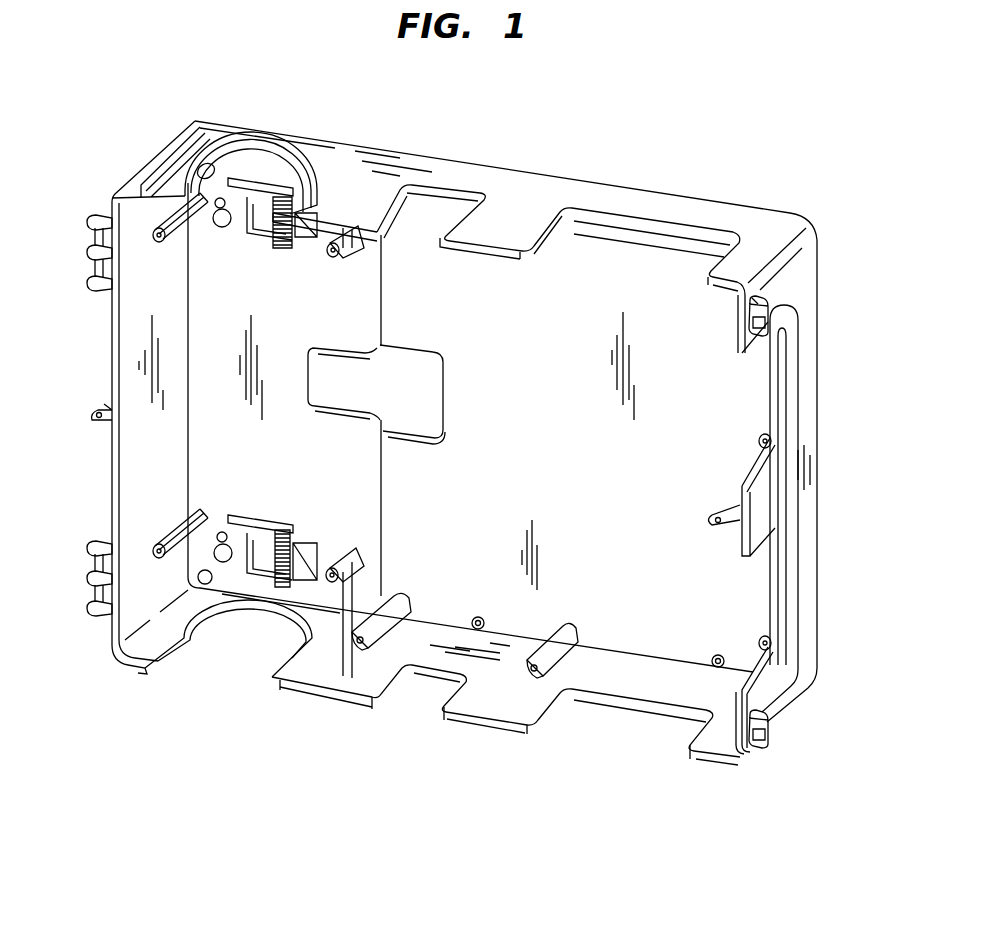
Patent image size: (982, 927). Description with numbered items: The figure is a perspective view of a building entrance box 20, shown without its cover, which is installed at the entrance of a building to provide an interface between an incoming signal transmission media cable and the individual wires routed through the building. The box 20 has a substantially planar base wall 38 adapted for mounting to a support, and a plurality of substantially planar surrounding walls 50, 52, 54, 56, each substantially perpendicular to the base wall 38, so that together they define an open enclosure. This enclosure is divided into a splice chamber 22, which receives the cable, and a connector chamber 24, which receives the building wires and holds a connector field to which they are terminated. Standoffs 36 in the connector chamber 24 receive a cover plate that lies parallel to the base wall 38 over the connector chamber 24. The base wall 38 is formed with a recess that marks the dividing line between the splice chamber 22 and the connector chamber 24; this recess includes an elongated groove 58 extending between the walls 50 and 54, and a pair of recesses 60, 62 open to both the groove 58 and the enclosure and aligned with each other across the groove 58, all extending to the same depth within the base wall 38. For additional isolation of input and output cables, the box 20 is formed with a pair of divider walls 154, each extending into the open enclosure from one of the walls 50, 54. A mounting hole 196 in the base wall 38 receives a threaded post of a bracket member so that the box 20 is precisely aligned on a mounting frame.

The building entrance box 20 is at (457, 727).
The splice chamber 22 is at (180, 476).
The connector chamber 24 is at (722, 416).
The standoffs 36 is at (410, 606).
The base wall 38 is at (577, 447).
The surrounding wall 50 is at (524, 200).
The surrounding wall 52 is at (795, 498).
The surrounding wall 54 is at (490, 704).
The surrounding wall 56 is at (125, 365).
The elongated groove 58 is at (390, 304).
The recess 60 is at (344, 392).
The recess 62 is at (432, 380).
The divider walls 154 is at (372, 248).
The mounting hole 196 is at (230, 228).